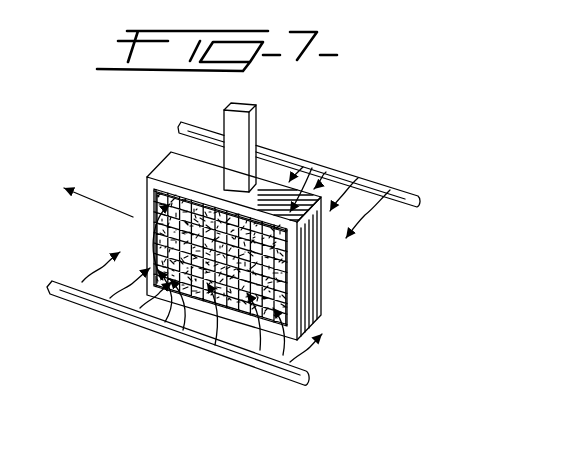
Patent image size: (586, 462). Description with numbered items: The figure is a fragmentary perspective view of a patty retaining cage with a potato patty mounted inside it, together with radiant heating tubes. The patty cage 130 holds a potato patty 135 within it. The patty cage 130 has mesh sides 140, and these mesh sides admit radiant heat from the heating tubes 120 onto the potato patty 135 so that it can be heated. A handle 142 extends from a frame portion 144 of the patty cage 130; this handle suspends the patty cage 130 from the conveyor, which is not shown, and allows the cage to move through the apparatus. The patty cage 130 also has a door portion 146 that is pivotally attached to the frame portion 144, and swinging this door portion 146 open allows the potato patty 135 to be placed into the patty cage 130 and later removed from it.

The heating tubes 120 is at (313, 161).
The patty cage 130 is at (323, 253).
The potato patty 135 is at (242, 260).
The mesh sides 140 is at (156, 207).
The handle 142 is at (256, 122).
The frame portion 144 is at (326, 168).
The door portion 146 is at (148, 234).